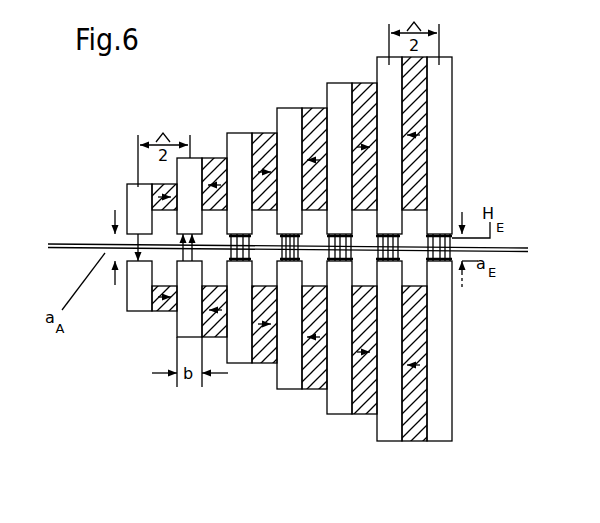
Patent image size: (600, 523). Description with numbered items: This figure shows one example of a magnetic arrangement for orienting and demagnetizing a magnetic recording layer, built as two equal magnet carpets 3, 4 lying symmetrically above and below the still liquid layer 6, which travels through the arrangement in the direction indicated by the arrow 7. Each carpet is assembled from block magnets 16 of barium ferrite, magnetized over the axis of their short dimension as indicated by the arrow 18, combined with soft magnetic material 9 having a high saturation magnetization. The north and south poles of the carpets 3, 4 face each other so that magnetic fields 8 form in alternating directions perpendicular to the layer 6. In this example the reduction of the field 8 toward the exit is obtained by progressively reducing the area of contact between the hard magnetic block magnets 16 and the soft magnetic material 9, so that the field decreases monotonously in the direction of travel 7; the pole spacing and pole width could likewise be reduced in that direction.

The magnet carpet 3 is at (452, 148).
The magnet carpet 4 is at (452, 353).
The still liquid layer 6 is at (522, 246).
The arrow indicating direction of movement 7 is at (75, 233).
The magnetic field 8 is at (138, 244).
The soft magnetic material 9 is at (238, 133).
The block magnet 16 is at (213, 157).
The arrow indicating magnetization direction 18 is at (363, 414).